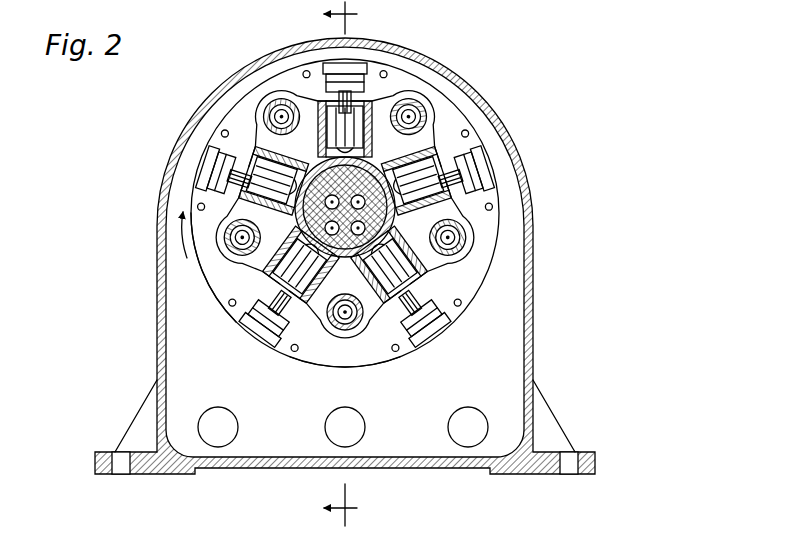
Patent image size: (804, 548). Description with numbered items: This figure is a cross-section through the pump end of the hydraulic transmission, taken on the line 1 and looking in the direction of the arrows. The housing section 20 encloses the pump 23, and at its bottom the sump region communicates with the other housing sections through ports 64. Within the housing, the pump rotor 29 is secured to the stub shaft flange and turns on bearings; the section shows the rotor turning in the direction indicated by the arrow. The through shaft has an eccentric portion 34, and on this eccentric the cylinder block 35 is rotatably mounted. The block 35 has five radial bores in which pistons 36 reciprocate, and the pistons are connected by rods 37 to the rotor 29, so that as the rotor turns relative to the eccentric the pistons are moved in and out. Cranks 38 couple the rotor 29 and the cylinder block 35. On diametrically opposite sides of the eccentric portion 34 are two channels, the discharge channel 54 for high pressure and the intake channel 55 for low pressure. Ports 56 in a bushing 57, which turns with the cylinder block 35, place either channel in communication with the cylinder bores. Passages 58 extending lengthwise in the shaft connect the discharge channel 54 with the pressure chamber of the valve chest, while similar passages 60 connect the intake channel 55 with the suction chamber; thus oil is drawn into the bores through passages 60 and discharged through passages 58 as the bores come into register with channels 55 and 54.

The section line 1- 1 is at (340, 265).
The housing section 20 is at (521, 162).
The pump 23 is at (389, 366).
The pump rotor 29 is at (460, 123).
The eccentric portion 34 is at (372, 150).
The cylinder block 35 is at (316, 116).
The pistons 36 is at (224, 300).
The rods 37 is at (283, 313).
The cranks 38 is at (325, 366).
The discharge channel 54 is at (292, 236).
The intake channel 55 is at (399, 223).
The ports 56 is at (283, 165).
The bushing 57 is at (292, 226).
The passages 58 is at (304, 241).
The passages 60 is at (366, 242).
The ports 64 is at (464, 446).